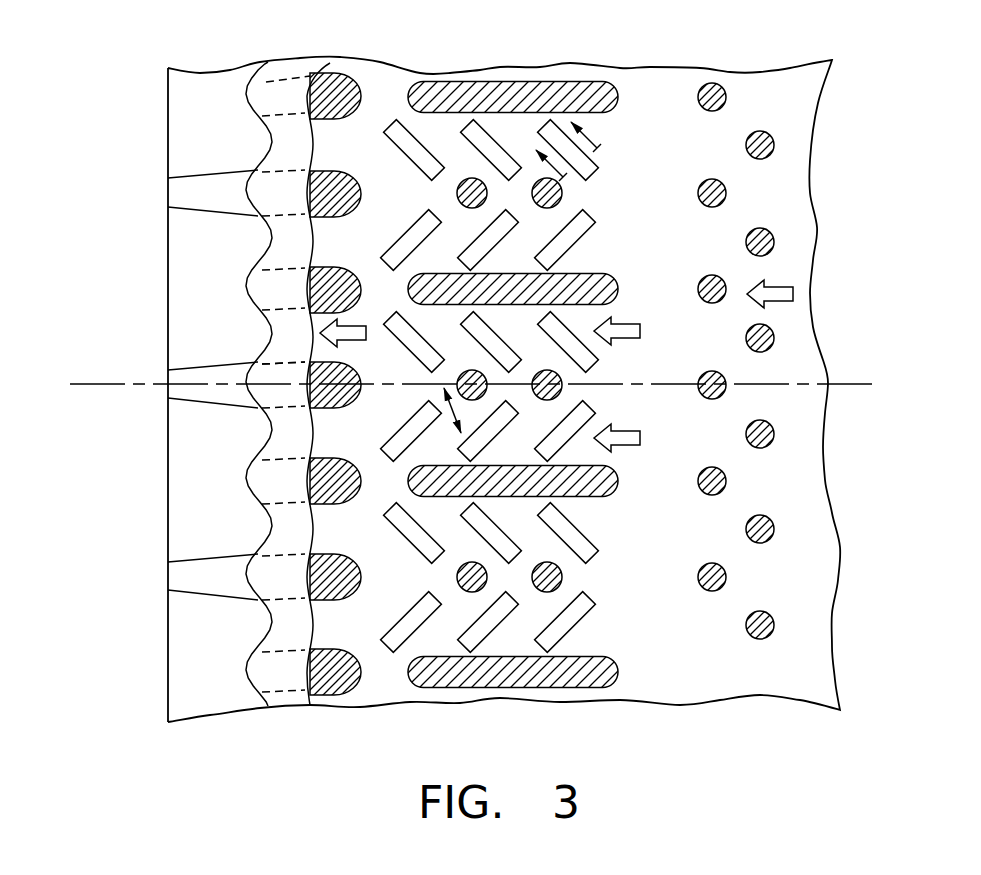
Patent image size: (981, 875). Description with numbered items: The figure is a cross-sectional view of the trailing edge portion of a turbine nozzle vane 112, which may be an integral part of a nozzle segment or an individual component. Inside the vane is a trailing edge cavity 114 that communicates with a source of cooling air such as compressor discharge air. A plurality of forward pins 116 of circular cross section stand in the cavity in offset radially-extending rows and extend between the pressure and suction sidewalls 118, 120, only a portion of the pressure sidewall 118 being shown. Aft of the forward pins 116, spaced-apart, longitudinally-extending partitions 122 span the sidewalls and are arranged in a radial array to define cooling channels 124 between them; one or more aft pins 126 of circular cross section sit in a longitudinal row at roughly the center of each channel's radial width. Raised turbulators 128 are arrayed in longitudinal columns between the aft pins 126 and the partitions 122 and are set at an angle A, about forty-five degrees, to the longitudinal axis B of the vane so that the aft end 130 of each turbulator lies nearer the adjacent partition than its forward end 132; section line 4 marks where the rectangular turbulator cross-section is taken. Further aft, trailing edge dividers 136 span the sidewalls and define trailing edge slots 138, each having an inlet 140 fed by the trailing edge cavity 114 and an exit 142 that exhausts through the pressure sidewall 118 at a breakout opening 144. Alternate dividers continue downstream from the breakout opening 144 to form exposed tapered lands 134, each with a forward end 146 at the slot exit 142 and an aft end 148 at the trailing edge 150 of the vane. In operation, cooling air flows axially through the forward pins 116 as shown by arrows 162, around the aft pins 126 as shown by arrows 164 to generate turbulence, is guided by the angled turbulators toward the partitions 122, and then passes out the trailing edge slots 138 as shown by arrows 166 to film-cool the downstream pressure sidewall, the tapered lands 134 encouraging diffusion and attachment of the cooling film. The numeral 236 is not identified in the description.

The turbine nozzle vane 112 is at (477, 371).
The trailing edge cavity 114 is at (651, 116).
The forward pins 116 is at (727, 95).
The pressure sidewall 118 is at (282, 356).
The suction sidewall 120 is at (708, 643).
The partitions 122 is at (512, 83).
The cooling channels 124 is at (610, 381).
The aft pins 126 is at (563, 577).
The turbulators 128 is at (601, 223).
The aft end 130 is at (524, 262).
The forward end 132 is at (601, 223).
The lands 134 is at (164, 365).
The trailing edge dividers 136 is at (256, 278).
The trailing edge slots 138 is at (340, 238).
The inlet 140 is at (356, 633).
The exit 142 is at (262, 524).
The breakout opening 144 is at (270, 432).
The forward end 146 is at (372, 185).
The aft end 148 is at (164, 196).
The trailing edge 150 is at (168, 293).
The arrows 162 is at (793, 292).
The arrows 164 is at (641, 320).
The arrows 166 is at (350, 348).
The projection 236 is at (354, 400).
The section line 4- 4 is at (562, 151).
The angle A is at (452, 412).
The longitudinal axis B is at (843, 382).